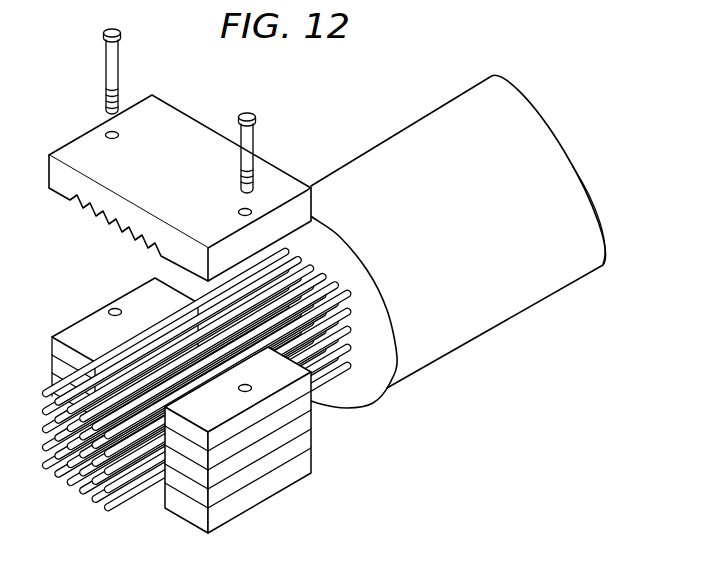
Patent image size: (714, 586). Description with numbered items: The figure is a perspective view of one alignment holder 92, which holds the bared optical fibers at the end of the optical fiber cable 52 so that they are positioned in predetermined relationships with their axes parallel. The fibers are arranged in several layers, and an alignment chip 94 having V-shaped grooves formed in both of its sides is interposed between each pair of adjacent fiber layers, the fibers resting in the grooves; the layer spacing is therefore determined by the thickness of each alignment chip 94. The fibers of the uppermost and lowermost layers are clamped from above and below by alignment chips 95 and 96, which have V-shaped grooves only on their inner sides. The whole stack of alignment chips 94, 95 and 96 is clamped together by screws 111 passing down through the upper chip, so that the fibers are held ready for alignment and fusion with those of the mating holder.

The optical fiber cable 52 is at (403, 157).
The alignment holder 92 is at (314, 527).
The alignment chip 94 is at (293, 388).
The alignment chip 95 is at (185, 137).
The alignment chip 96 is at (282, 480).
The screws 111 is at (106, 81).